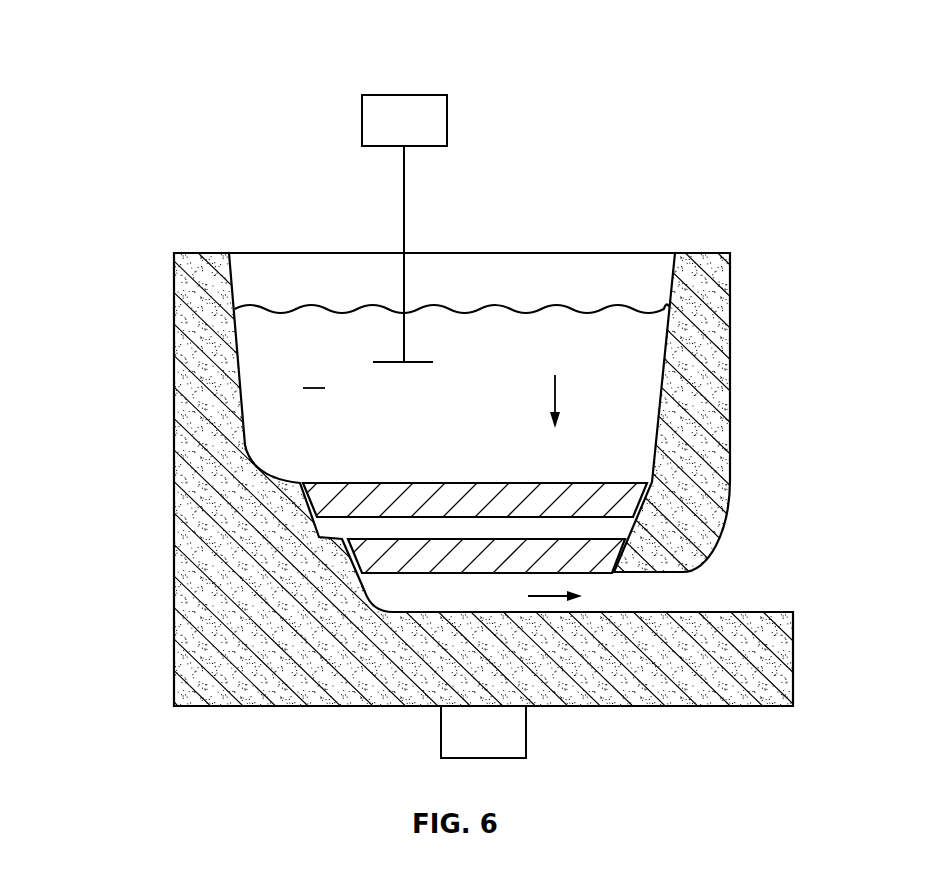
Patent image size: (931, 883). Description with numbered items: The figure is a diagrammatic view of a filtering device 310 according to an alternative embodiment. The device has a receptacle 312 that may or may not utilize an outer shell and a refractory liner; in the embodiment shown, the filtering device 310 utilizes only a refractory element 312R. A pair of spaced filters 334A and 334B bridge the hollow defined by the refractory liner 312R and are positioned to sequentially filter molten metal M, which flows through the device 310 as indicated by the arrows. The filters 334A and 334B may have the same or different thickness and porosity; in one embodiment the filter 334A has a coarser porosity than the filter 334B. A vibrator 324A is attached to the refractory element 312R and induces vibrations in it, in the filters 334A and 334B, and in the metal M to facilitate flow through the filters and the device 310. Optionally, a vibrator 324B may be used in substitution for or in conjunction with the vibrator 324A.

The filtering device 310 is at (120, 188).
The receptacle 312 is at (116, 414).
The refractory element 312R is at (186, 589).
The vibrator 324A is at (510, 732).
The vibrator 324B is at (404, 95).
The filter 334A is at (433, 497).
The filter 334B is at (578, 555).